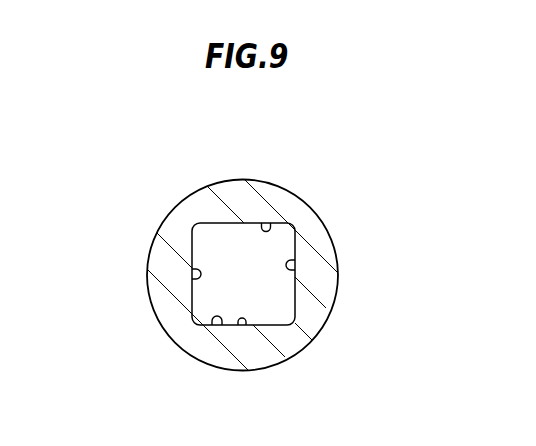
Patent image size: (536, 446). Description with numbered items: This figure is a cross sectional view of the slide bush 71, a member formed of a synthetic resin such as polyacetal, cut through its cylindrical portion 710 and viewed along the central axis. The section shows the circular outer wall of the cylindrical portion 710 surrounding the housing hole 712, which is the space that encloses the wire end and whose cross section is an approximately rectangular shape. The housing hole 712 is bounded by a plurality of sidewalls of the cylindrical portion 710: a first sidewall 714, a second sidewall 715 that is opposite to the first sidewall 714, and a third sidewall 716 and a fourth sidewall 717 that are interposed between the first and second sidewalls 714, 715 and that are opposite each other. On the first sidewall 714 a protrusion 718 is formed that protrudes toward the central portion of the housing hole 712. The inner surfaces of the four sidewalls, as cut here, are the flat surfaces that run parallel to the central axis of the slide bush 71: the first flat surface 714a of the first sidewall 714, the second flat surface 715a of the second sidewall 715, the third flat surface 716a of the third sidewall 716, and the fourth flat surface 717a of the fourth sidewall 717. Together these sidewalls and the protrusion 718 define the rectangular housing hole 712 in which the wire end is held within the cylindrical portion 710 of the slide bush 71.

The slide bush 71 is at (161, 167).
The cylindrical portion 710 is at (331, 207).
The housing hole 712 is at (191, 231).
The first sidewall 714 is at (229, 337).
The first flat surface 714a is at (210, 328).
The second sidewall 715 is at (237, 212).
The second flat surface 715a is at (267, 222).
The third sidewall 716 is at (305, 263).
The third flat surface 716a is at (290, 272).
The fourth sidewall 717 is at (192, 266).
The fourth flat surface 717a is at (198, 275).
The protrusion 718 is at (243, 328).